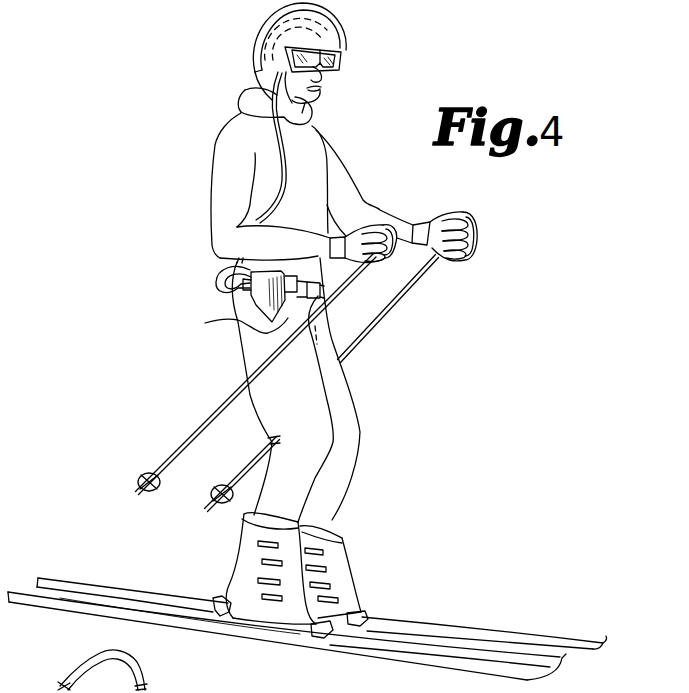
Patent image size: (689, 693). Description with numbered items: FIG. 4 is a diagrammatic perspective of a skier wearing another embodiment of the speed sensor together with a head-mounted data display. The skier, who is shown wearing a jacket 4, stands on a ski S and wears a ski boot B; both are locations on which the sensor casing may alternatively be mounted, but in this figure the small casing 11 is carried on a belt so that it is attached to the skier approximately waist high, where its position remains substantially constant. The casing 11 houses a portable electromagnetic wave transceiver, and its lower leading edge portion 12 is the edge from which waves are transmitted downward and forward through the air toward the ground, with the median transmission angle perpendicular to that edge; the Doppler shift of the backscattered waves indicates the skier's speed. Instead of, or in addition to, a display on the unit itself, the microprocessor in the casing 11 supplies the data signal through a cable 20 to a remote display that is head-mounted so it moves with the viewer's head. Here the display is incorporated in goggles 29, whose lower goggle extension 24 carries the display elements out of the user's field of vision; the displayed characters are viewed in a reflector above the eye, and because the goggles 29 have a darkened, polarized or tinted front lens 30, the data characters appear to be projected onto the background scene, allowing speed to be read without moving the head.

The front lens 30 is at (346, 46).
The goggles 29 is at (347, 62).
The lower goggle extension 24 is at (271, 87).
The skier garment 4 is at (220, 194).
The cable 20 is at (217, 277).
The casing 11 is at (236, 319).
The lower leading edge portion 12 is at (238, 344).
The ski boot B is at (313, 576).
The ski S is at (403, 628).